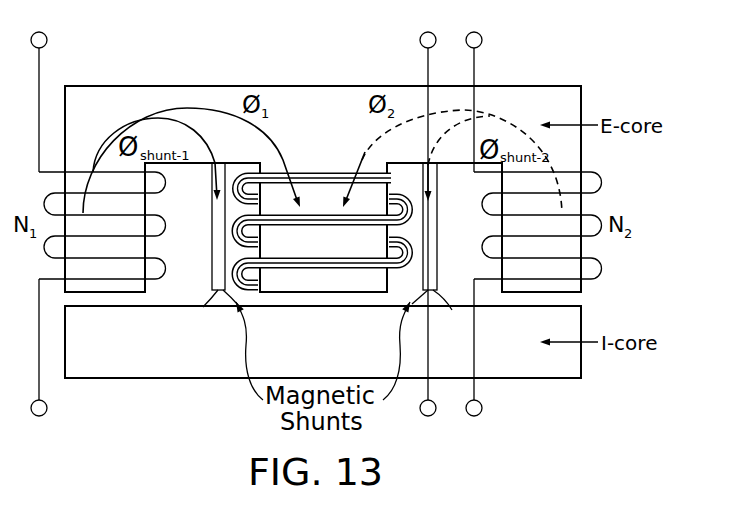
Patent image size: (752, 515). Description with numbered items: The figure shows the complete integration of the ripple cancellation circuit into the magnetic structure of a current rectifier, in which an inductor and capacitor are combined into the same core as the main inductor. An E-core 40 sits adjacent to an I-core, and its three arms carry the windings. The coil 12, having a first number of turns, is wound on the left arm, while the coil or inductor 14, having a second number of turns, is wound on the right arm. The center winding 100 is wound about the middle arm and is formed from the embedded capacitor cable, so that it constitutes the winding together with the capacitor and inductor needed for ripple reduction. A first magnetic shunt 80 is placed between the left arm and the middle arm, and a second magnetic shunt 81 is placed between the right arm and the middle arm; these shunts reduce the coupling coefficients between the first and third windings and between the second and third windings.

The coil 12 is at (78, 172).
The coil 14 is at (476, 62).
The E-core 40 is at (508, 86).
The center winding 100 is at (345, 172).
The magnetic shunt 80 is at (203, 307).
The magnetic shunt 81 is at (452, 310).